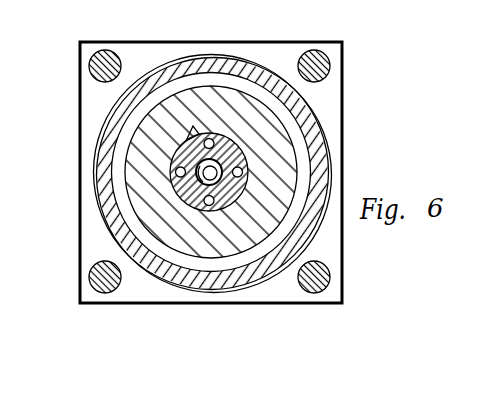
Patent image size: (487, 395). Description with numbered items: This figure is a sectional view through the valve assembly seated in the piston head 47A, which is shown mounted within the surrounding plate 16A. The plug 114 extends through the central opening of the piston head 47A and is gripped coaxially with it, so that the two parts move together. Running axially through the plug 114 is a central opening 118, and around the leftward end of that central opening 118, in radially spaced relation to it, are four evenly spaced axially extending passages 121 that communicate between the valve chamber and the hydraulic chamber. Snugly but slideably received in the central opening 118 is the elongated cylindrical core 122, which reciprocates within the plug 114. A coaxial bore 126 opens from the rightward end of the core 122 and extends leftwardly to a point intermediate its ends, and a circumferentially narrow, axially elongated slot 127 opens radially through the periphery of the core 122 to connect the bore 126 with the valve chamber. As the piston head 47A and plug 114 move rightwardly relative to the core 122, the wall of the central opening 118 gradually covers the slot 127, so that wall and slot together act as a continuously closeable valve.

The mounting plate 16A is at (240, 52).
The piston head 47A is at (262, 172).
The plug 114 is at (196, 131).
The central opening 118 is at (208, 174).
The axially extending passages 121 is at (237, 137).
The core 122 is at (182, 205).
The bore 126 is at (216, 204).
The slot 127 is at (225, 163).